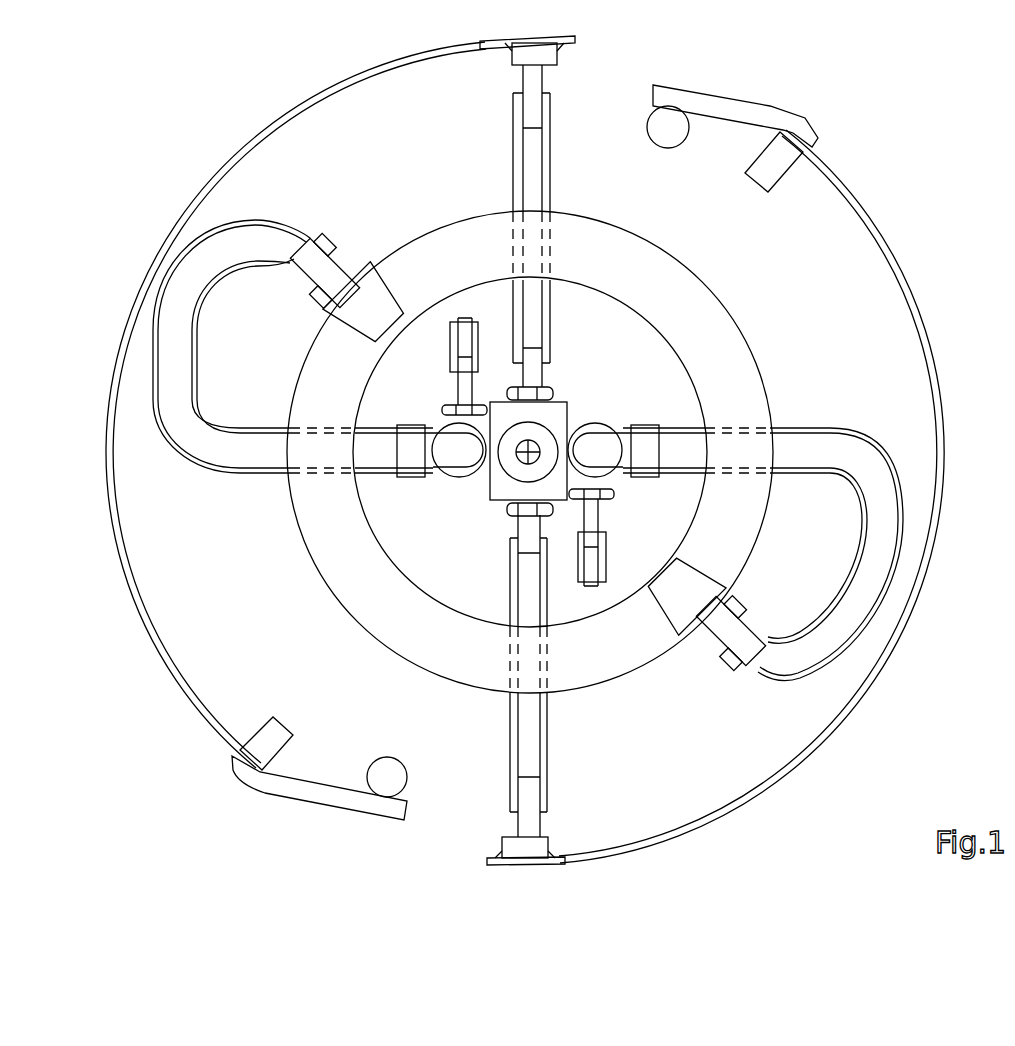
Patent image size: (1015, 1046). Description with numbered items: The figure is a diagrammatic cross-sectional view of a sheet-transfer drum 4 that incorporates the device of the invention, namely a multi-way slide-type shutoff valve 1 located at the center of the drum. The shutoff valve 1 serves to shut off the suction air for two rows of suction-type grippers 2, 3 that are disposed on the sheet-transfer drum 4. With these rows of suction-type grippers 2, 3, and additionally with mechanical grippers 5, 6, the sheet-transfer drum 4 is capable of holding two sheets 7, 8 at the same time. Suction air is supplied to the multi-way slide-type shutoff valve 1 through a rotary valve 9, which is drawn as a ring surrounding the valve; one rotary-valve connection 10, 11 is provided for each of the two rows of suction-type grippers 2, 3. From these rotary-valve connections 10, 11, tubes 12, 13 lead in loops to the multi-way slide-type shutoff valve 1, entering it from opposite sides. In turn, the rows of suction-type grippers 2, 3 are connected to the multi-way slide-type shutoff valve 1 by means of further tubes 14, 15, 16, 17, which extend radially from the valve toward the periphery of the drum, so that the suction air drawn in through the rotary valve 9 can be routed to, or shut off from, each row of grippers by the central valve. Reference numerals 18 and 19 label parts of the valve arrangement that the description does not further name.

The multi-way slide-type shutoff valve 1 is at (557, 412).
The row of suction-type grippers 2 is at (556, 39).
The row of suction-type grippers 3 is at (490, 872).
The sheet-transfer drum 4 is at (151, 204).
The mechanical gripper 5 is at (335, 800).
The mechanical gripper 6 is at (735, 110).
The sheet 7 is at (127, 320).
The sheet 8 is at (902, 640).
The rotary valve 9 is at (305, 540).
The rotary-valve connection 10 is at (383, 292).
The rotary-valve connection 11 is at (700, 586).
The tube 12 is at (178, 292).
The tube 13 is at (903, 530).
The tube 14 is at (550, 128).
The tube 15 is at (515, 743).
The tube 16 is at (455, 335).
The tube 17 is at (605, 565).
The left ball joint 18 is at (471, 485).
The right ball joint 19 is at (595, 432).